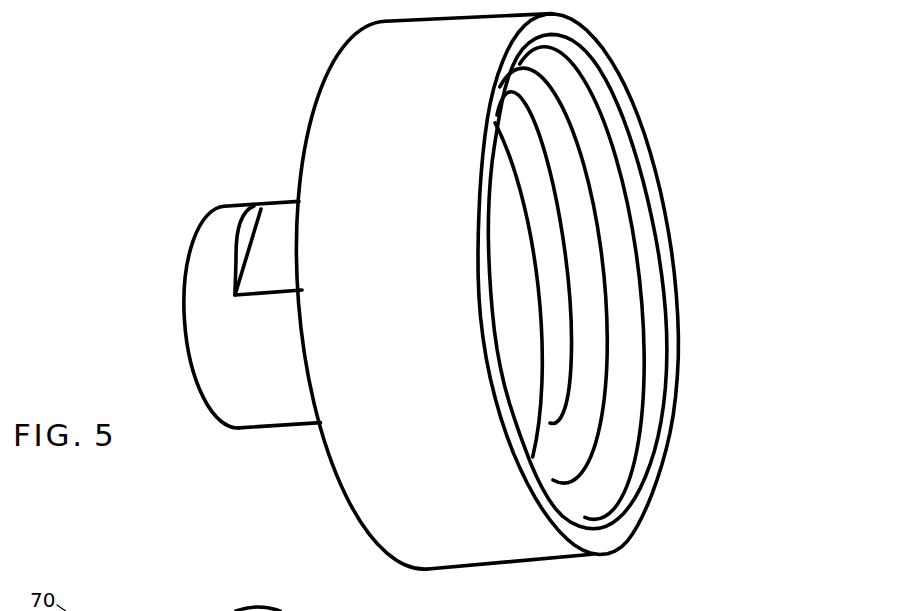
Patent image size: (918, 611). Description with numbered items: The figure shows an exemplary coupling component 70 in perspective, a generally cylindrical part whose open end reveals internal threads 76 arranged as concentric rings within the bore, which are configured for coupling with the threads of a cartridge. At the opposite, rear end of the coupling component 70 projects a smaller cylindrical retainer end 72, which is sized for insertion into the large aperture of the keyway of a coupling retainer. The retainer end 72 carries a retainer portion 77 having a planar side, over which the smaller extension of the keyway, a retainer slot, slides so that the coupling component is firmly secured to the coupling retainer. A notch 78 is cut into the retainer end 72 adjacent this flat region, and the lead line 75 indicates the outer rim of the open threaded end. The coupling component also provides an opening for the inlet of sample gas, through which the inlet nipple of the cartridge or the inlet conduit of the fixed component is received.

The coupling component 70 is at (417, 290).
The retainer end 72 is at (191, 276).
The rim 75 is at (647, 133).
The threads 76 is at (638, 250).
The retainer portion 77 is at (230, 323).
The notch 78 is at (282, 246).